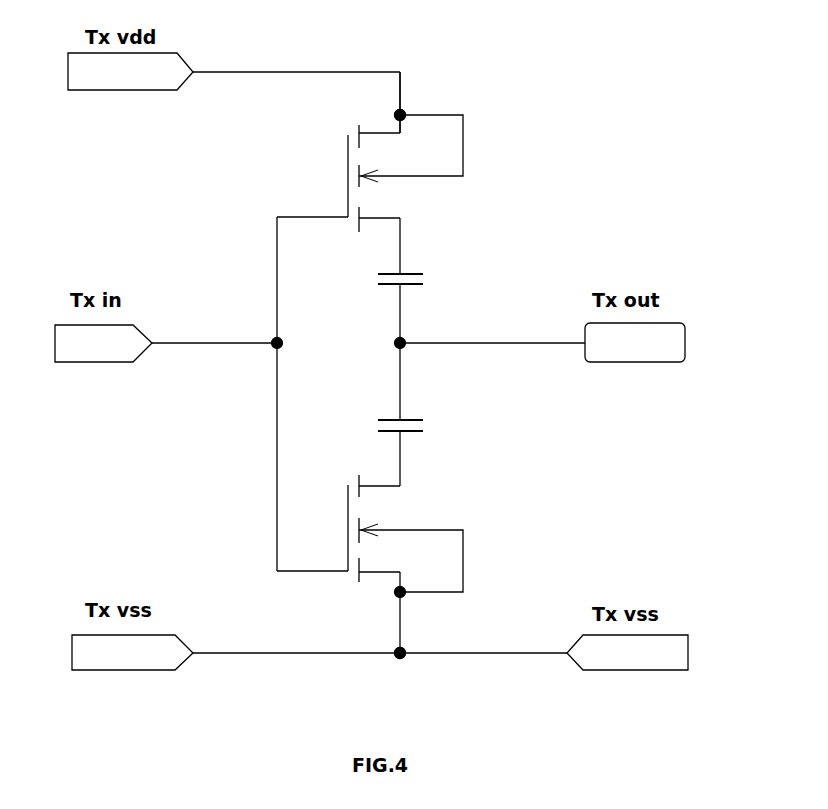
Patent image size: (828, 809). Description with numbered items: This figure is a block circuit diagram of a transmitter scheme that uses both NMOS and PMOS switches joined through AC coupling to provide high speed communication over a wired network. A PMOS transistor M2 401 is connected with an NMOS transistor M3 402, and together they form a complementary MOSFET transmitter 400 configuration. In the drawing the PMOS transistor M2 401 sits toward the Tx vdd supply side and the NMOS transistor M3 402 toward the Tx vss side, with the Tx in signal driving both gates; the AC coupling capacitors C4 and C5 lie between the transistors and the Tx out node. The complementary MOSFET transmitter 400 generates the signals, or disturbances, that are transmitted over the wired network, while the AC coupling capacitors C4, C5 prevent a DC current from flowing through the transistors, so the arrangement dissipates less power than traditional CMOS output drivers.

The complementary MOSFET transmitter 400 is at (575, 107).
The PMOS transistor 401 is at (423, 85).
The NMOS transistor 402 is at (433, 668).
The PMOS transistor M2 is at (431, 173).
The NMOS transistor M3 is at (405, 533).
The AC coupling capacitor C4 is at (412, 263).
The AC coupling capacitor C5 is at (412, 409).